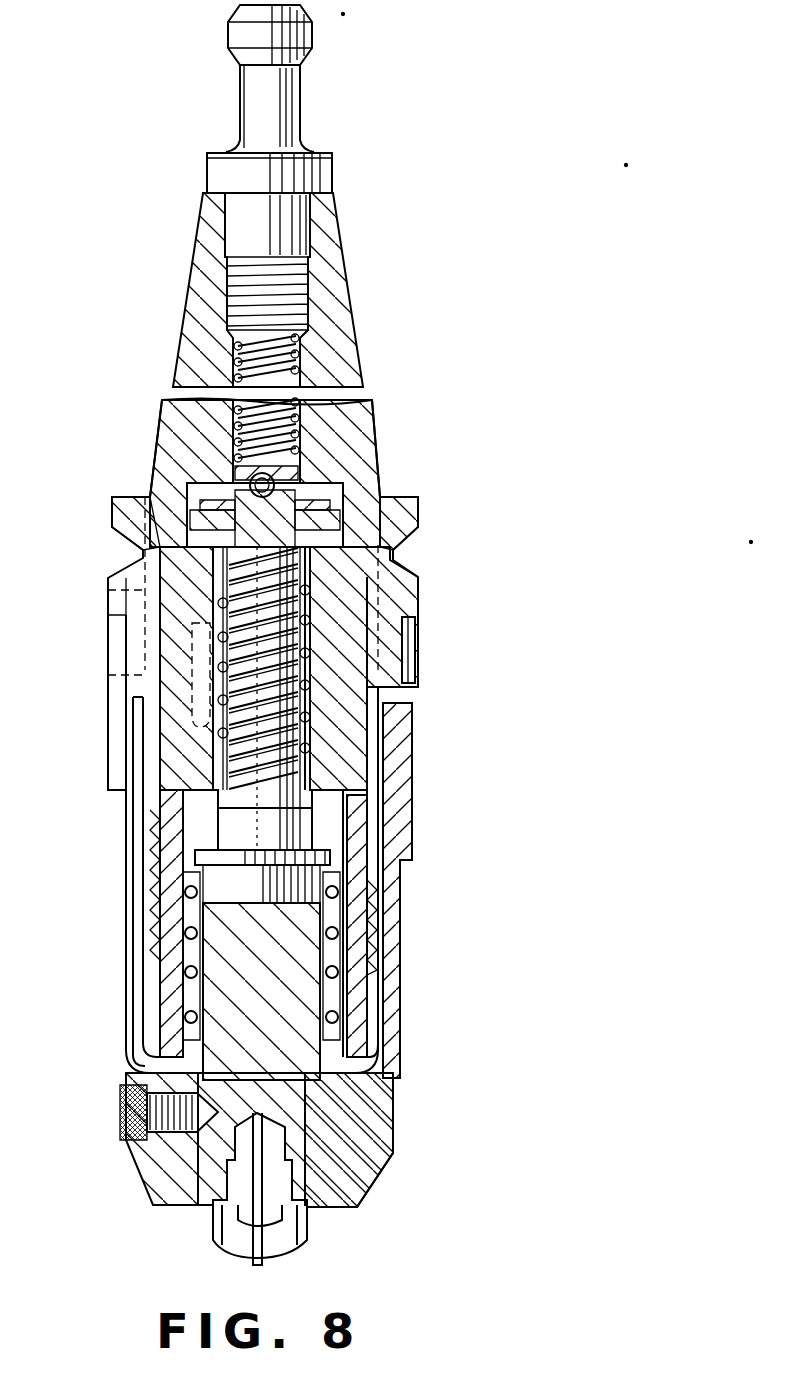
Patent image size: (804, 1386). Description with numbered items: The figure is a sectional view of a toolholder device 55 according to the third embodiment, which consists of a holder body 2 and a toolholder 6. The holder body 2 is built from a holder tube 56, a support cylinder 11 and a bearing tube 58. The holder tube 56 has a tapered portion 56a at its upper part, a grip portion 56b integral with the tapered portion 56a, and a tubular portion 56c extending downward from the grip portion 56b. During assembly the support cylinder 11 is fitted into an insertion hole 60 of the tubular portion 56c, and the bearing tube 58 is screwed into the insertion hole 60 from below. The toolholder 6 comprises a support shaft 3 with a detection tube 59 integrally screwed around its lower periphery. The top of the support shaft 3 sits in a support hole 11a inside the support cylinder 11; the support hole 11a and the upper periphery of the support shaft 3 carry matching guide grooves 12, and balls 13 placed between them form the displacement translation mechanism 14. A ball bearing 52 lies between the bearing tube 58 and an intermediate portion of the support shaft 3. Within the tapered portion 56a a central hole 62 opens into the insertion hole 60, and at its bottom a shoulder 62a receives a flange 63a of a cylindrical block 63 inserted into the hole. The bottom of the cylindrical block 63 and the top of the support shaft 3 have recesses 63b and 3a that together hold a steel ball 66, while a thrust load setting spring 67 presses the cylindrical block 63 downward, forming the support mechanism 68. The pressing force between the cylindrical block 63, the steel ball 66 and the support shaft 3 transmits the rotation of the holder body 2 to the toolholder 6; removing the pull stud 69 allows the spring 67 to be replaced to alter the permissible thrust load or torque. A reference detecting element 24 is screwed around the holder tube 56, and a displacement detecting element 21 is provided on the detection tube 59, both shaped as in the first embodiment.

The holder body 2 is at (391, 413).
The support shaft 3 is at (312, 740).
The recess 3a is at (190, 500).
The toolholder 6 is at (410, 1138).
The support cylinder 11 is at (370, 562).
The support hole 11a is at (372, 630).
The guide grooves 12 is at (215, 580).
The balls 13 is at (312, 600).
The displacement translation mechanism 14 is at (390, 665).
The displacement detecting element 21 is at (405, 812).
The reference detecting element 24 is at (118, 735).
The ball bearing 52 is at (182, 1005).
The toolholder device 55 is at (415, 938).
The holder tube 56 is at (376, 450).
The tapered portion 56a is at (340, 292).
The grip portion 56b is at (420, 527).
The tubular portion 56c is at (398, 755).
The bearing tube 58 is at (375, 878).
The detection tube 59 is at (385, 1062).
The insertion hole 60 is at (385, 690).
The central hole 62 is at (305, 365).
The shoulder 62a is at (278, 482).
The cylindrical block 63 is at (238, 470).
The flange 63a is at (190, 432).
The recess 63b is at (382, 490).
The steel ball 66 is at (175, 470).
The thrust load setting spring 67 is at (200, 350).
The support mechanism 68 is at (302, 440).
The pull stud 69 is at (292, 110).